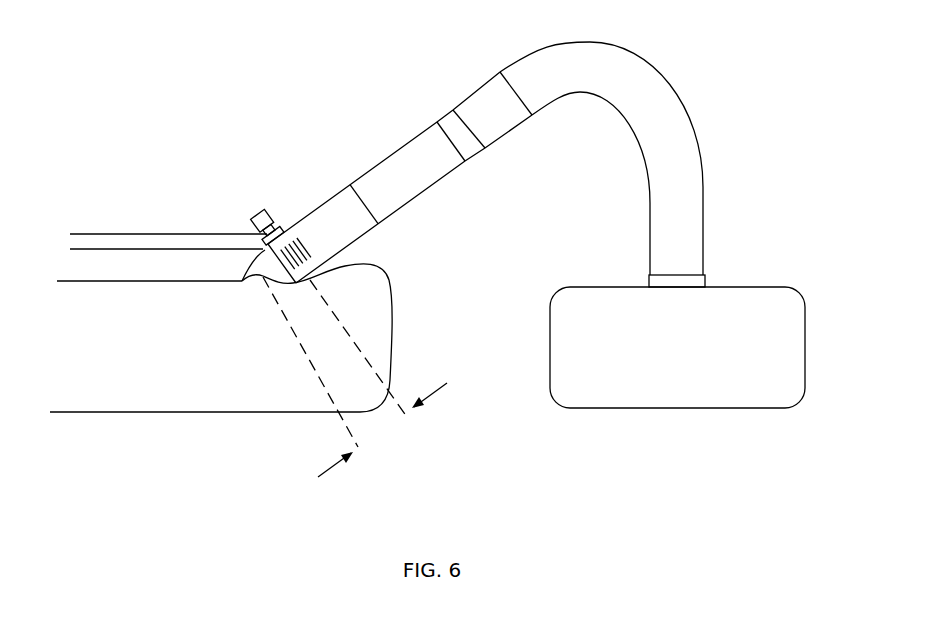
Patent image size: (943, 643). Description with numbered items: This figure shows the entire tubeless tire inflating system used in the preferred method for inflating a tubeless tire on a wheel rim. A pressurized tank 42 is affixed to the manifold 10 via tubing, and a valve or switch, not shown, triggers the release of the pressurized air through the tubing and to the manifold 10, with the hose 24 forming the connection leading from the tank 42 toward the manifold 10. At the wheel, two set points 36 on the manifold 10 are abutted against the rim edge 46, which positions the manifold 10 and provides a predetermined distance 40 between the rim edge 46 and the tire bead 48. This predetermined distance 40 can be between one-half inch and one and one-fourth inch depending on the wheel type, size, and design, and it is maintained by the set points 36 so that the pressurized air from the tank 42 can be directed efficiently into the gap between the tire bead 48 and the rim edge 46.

The manifold 10 is at (315, 178).
The flexible tube 24 is at (602, 164).
The set points 36 is at (262, 210).
The predetermined distance 40 is at (372, 440).
The pressurized tank 42 is at (740, 286).
The rim edge 46 is at (245, 234).
The tire bead 48 is at (262, 277).